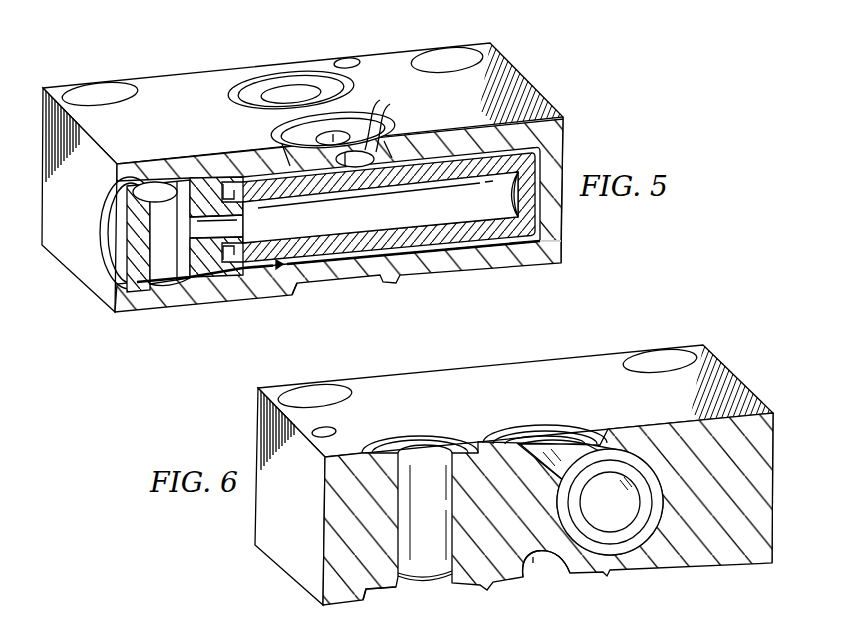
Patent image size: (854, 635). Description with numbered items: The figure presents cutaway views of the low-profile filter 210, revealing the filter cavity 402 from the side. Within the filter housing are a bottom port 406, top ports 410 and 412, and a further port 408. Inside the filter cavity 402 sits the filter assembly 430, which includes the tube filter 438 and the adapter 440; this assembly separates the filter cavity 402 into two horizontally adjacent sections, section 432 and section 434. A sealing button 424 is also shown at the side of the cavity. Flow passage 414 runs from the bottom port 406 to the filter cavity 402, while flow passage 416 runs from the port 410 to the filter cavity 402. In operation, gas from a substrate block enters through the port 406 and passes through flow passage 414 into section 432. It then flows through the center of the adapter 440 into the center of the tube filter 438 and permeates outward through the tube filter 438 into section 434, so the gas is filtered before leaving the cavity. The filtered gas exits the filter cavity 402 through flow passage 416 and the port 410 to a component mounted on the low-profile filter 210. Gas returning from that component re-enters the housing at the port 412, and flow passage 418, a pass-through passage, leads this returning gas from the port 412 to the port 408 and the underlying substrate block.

In FIG. 5, the low-profile filter 210 is at (181, 61).
In FIG. 6, the low-profile filter 210 is at (600, 335).
In FIG. 5, the filter cavity 402 is at (462, 255).
In FIG. 6, the filter cavity 402 is at (655, 483).
In FIG. 5, the bottom port 406 is at (318, 285).
In FIG. 6, the bottom port 406 is at (576, 577).
In FIG. 6, the port 408 is at (388, 593).
In FIG. 5, the top port 410 is at (271, 118).
In FIG. 6, the top port 410 is at (520, 418).
In FIG. 5, the top port 412 is at (306, 65).
In FIG. 6, the top port 412 is at (434, 426).
In FIG. 5, the flow passage 414 is at (131, 188).
In FIG. 5, the flow passage 416 is at (377, 112).
In FIG. 6, the flow passage 416 is at (553, 447).
In FIG. 6, the flow passage 418 is at (435, 561).
In FIG. 5, the sealing button 424 is at (115, 228).
In FIG. 5, the filter assembly 430 is at (278, 270).
In FIG. 5, the section 432 is at (160, 285).
In FIG. 5, the section 434 is at (358, 262).
In FIG. 5, the tube filter 438 is at (408, 242).
In FIG. 6, the tube filter 438 is at (631, 553).
In FIG. 5, the adapter 440 is at (203, 275).